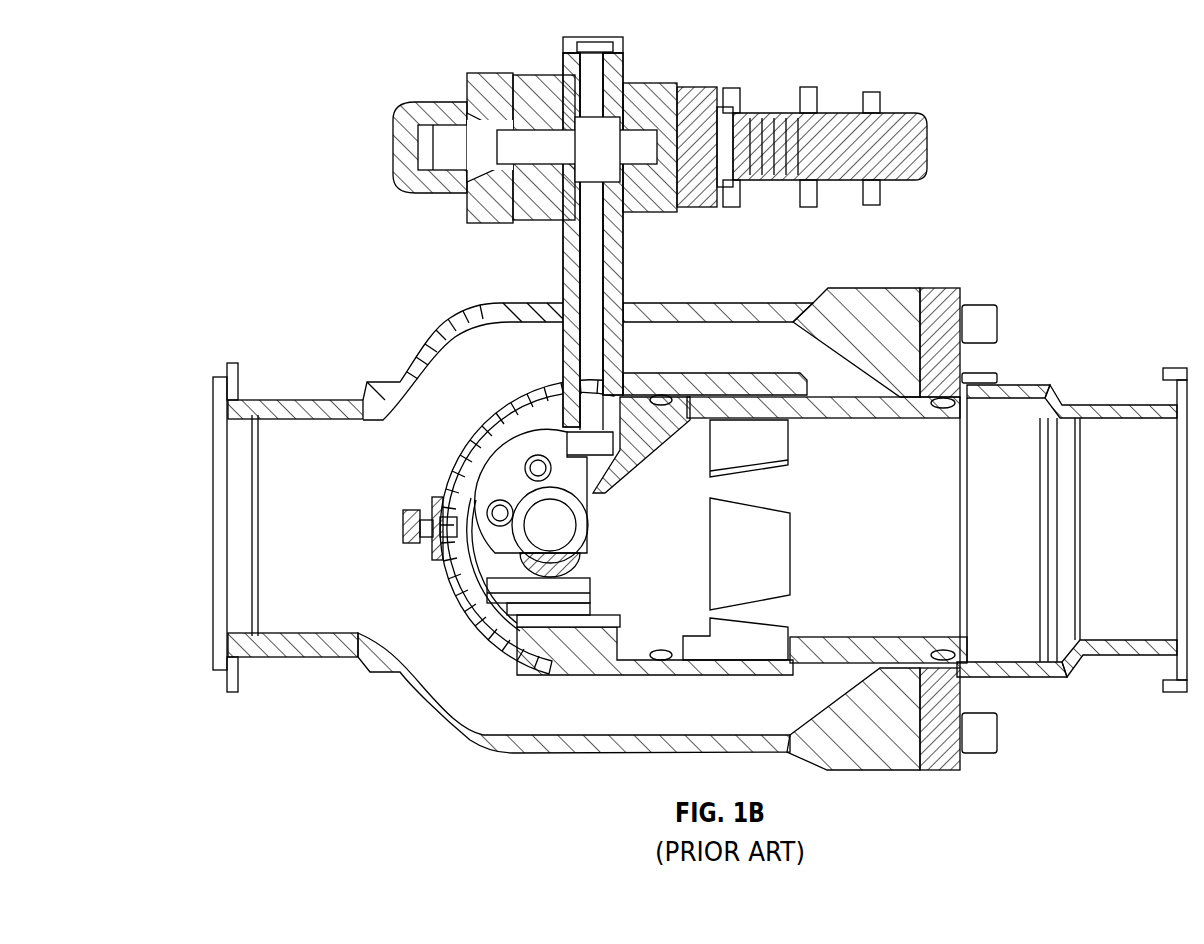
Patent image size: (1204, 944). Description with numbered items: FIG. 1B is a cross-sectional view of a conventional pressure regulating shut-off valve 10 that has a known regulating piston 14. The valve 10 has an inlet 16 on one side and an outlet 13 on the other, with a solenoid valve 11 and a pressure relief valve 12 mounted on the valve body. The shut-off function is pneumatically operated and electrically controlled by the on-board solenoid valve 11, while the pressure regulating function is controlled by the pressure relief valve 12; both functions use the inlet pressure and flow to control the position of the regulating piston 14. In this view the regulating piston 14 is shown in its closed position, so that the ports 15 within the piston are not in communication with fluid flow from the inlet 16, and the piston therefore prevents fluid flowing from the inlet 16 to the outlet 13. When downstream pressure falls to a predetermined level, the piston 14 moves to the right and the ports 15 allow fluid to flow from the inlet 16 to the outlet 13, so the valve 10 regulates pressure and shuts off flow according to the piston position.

The pressure regulating shut-off valve 10 is at (372, 59).
The solenoid valve 11 is at (457, 133).
The pressure relief valve 12 is at (690, 207).
The outlet 13 is at (1127, 437).
The regulating piston 14 is at (857, 647).
The ports 15 is at (783, 517).
The inlet 16 is at (310, 427).